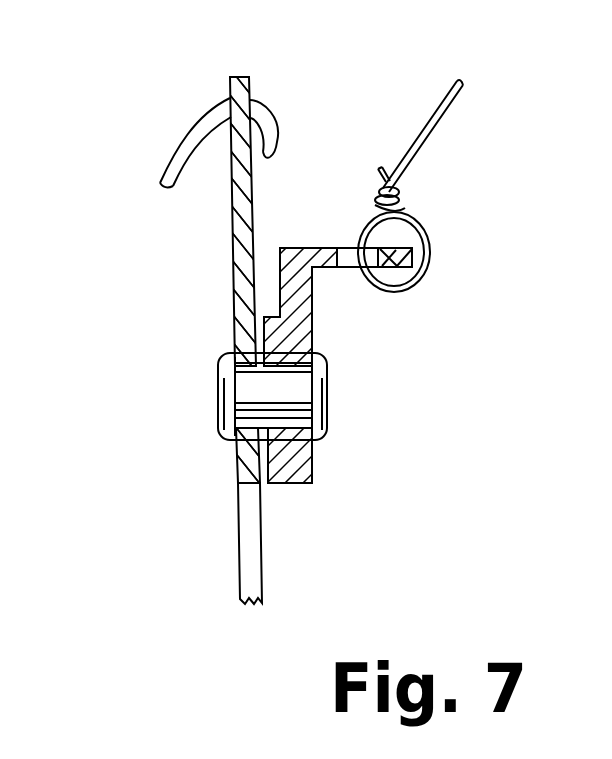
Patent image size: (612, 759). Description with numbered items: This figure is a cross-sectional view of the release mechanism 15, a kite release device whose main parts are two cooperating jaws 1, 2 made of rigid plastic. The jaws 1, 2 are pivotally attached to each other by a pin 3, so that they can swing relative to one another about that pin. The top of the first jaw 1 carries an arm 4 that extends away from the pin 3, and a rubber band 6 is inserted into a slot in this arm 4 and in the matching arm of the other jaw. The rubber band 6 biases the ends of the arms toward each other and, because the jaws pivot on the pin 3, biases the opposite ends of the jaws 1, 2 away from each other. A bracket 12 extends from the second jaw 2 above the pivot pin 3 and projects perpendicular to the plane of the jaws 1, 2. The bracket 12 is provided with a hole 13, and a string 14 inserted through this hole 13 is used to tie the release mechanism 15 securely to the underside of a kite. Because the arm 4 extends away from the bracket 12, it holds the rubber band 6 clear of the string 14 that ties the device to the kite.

The jaw 1 is at (247, 515).
The jaw 2 is at (292, 478).
The pin 3 is at (295, 398).
The arm 4 is at (240, 77).
The rubber band 6 is at (207, 123).
The bracket 12 is at (410, 265).
The hole 13 is at (352, 247).
The string 14 is at (455, 92).
The release mechanism 15 is at (178, 312).